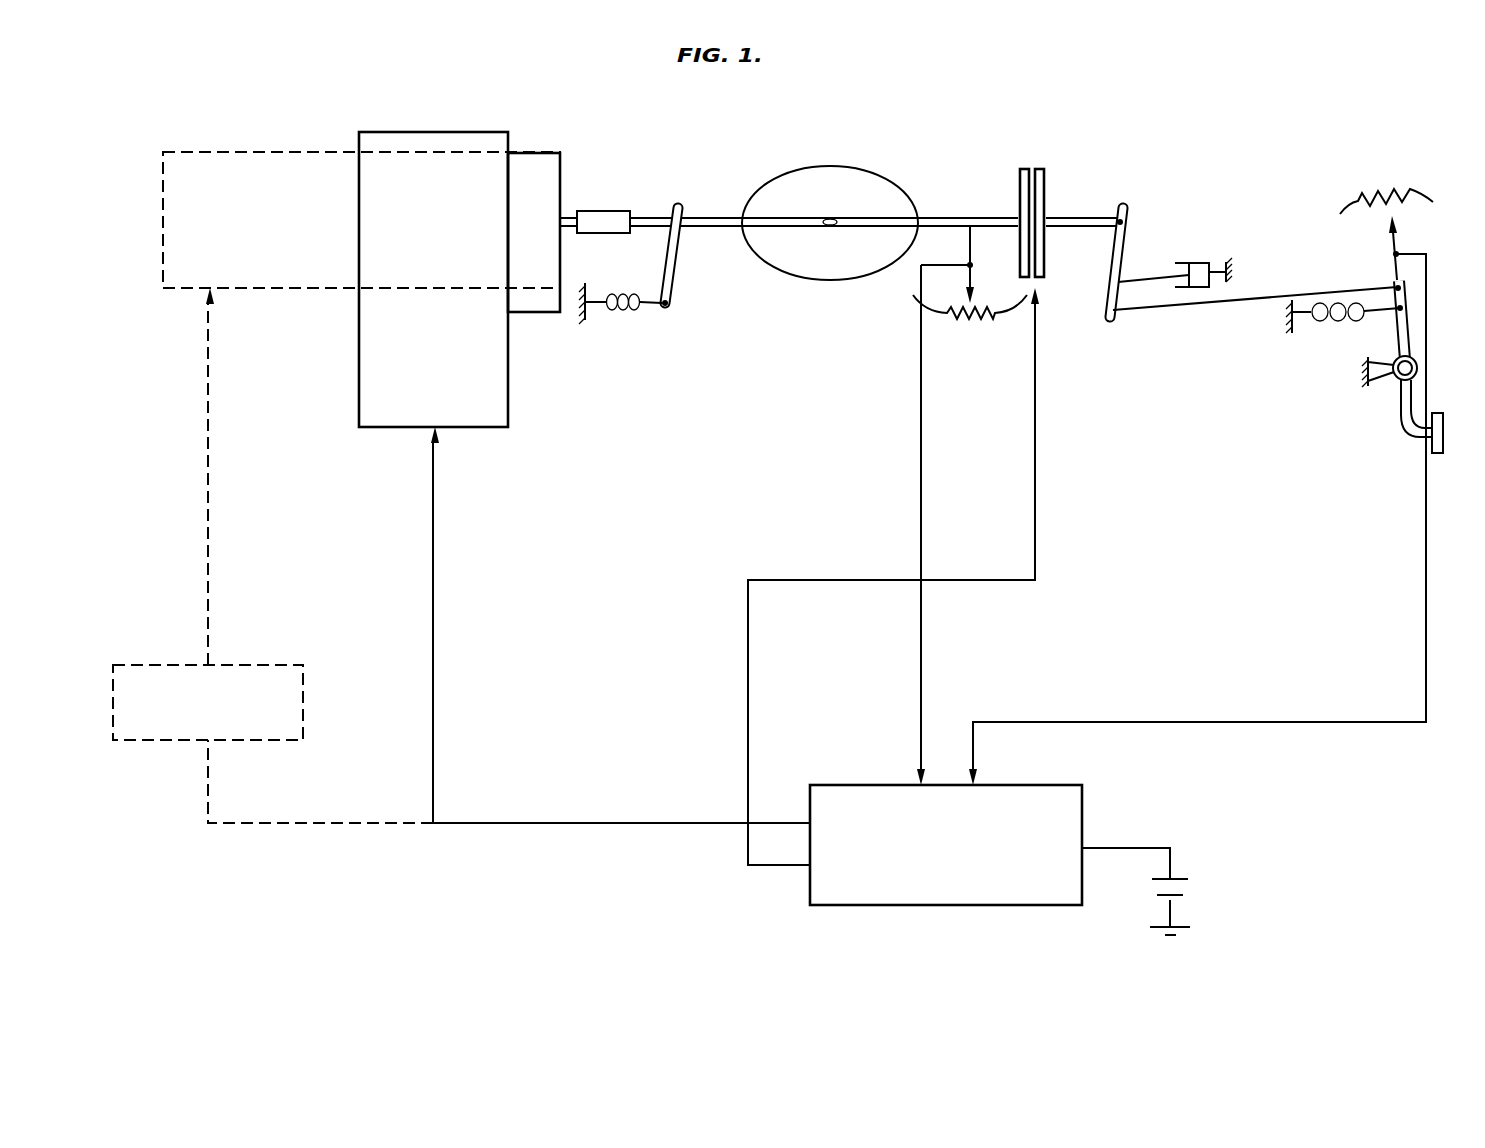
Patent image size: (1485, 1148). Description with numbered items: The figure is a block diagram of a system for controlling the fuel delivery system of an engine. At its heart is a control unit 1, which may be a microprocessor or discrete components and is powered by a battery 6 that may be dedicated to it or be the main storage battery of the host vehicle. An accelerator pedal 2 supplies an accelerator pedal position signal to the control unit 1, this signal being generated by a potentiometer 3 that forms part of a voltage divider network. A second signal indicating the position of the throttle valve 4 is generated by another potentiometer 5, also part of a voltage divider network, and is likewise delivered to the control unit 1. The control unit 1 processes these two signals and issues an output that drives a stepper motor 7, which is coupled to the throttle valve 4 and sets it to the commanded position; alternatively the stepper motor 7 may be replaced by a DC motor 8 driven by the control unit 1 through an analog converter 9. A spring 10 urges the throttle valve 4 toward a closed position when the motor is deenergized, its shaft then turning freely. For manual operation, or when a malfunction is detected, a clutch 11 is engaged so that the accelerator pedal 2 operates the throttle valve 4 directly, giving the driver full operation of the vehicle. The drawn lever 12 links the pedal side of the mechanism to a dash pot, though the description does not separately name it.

The control unit 1 is at (1057, 785).
The accelerator pedal 2 is at (1413, 398).
The potentiometer 3 is at (1412, 193).
The throttle valve 4 is at (830, 281).
The potentiometer 5 is at (981, 302).
The battery 6 is at (1175, 874).
The stepper motor 7 is at (508, 405).
The DC motor 8 is at (287, 289).
The analog converter 9 is at (272, 664).
The spring 10 is at (622, 313).
The clutch 11 is at (1047, 197).
The dash pot lever 12 is at (1112, 320).